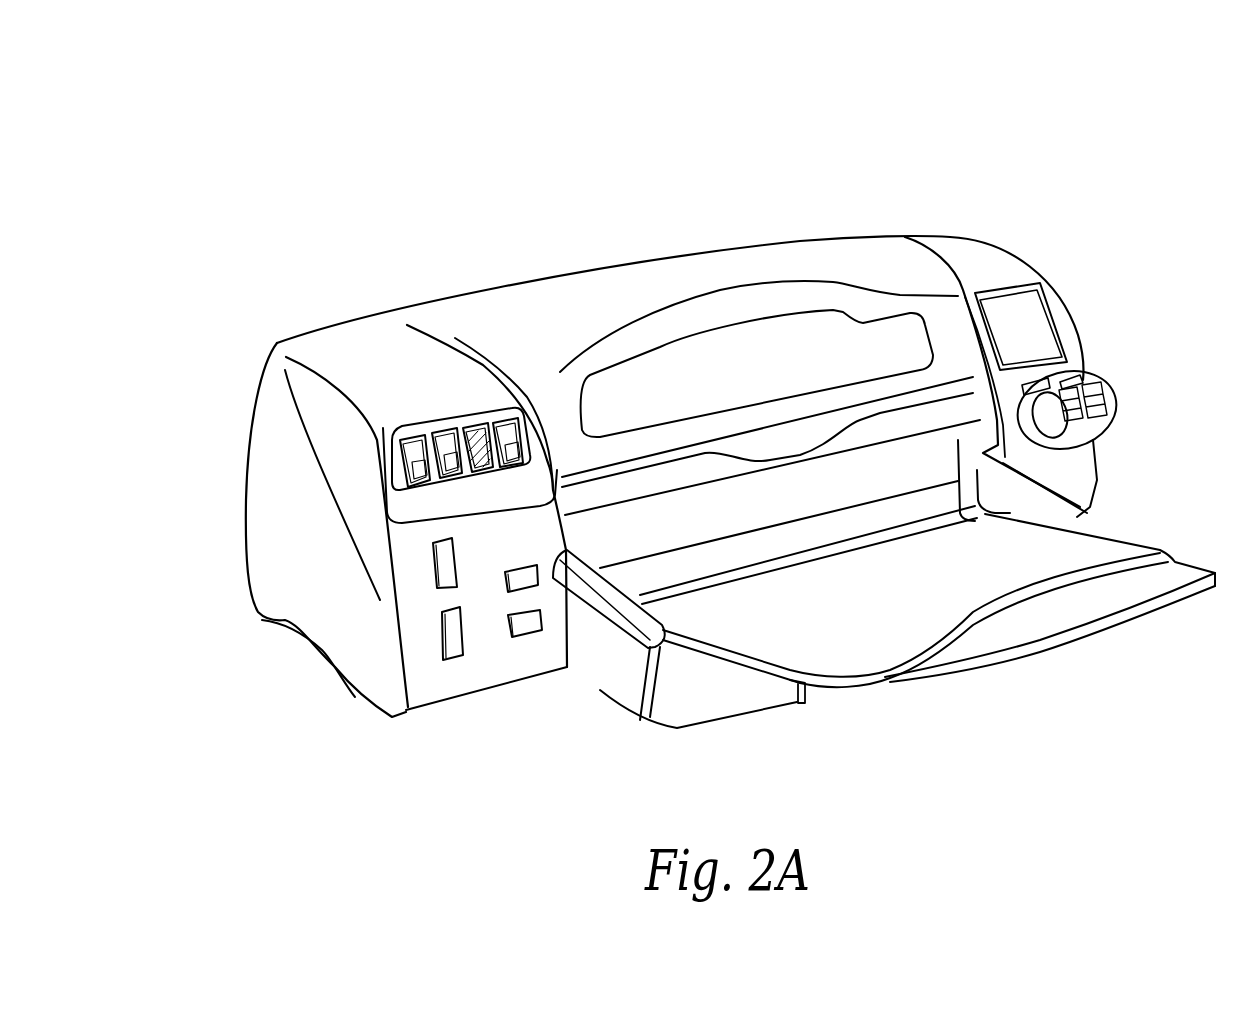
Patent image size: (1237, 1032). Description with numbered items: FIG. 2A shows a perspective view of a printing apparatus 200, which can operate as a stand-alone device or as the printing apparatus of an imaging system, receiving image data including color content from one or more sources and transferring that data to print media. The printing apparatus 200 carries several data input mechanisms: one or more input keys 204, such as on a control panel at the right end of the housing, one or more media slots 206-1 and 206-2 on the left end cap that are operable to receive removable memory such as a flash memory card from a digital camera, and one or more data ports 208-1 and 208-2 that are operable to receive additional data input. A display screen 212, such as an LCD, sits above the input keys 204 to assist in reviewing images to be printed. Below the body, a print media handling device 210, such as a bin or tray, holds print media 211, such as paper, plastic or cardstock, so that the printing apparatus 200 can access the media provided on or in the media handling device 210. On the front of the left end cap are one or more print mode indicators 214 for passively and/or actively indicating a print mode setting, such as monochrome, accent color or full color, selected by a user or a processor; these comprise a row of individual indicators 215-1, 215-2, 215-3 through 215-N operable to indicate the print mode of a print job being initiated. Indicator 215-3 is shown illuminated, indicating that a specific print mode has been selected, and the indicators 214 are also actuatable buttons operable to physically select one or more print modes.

The printing apparatus 200 is at (352, 113).
The input keys 204 is at (1093, 382).
The media slot 206-1 is at (445, 560).
The media slot 206-2 is at (450, 637).
The data port 208-1 is at (541, 580).
The data port 208-2 is at (542, 627).
The print media handling device 210 is at (785, 693).
The print media 211 is at (1132, 544).
The display screen 212 is at (1040, 318).
The print mode indicators 214 is at (508, 405).
The indicator 215-1 is at (413, 475).
The indicator 215-2 is at (453, 470).
The indicator 215-3 is at (485, 467).
The indicator 215-N is at (518, 457).